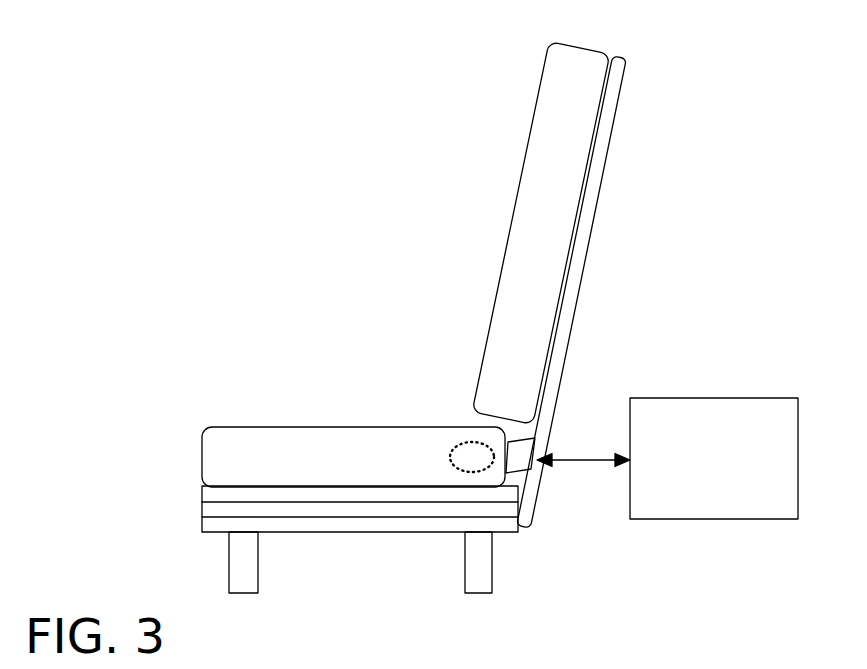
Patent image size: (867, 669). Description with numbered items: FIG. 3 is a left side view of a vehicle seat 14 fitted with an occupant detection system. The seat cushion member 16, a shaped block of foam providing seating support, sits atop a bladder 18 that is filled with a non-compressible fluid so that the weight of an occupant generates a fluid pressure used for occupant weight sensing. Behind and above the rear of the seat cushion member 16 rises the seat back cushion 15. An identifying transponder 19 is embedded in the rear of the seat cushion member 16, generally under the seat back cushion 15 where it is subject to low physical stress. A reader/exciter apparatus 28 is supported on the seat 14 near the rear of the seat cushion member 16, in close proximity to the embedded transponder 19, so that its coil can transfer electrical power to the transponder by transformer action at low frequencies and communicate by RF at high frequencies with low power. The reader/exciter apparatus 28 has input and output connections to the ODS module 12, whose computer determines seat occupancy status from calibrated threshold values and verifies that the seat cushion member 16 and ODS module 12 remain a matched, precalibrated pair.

The ODS module 12 is at (715, 372).
The vehicle seat 14 is at (355, 564).
The seat back cushion 15 is at (520, 192).
The seat cushion member 16 is at (313, 427).
The bladder 18 is at (202, 487).
The identifying transponder 19 is at (450, 443).
The reader/exciter apparatus 28 is at (522, 460).